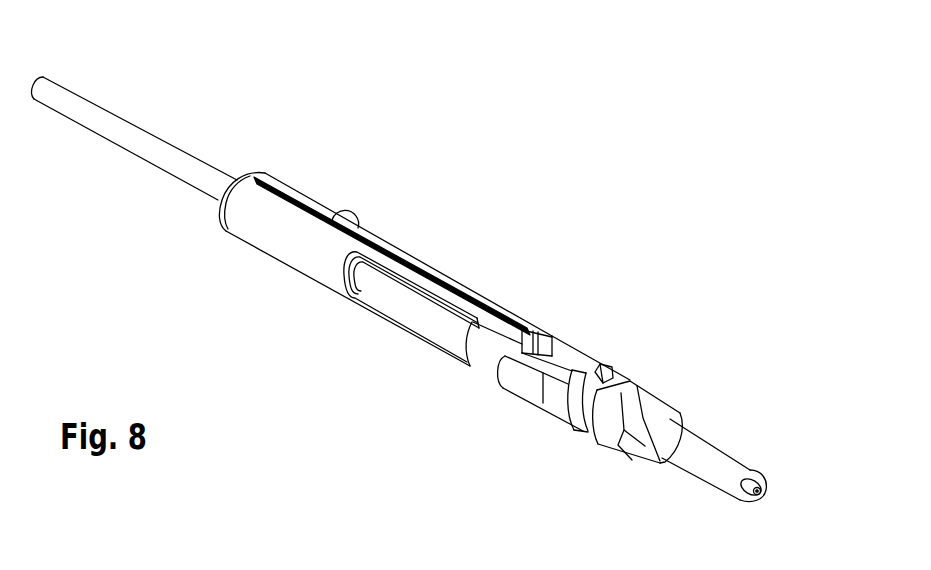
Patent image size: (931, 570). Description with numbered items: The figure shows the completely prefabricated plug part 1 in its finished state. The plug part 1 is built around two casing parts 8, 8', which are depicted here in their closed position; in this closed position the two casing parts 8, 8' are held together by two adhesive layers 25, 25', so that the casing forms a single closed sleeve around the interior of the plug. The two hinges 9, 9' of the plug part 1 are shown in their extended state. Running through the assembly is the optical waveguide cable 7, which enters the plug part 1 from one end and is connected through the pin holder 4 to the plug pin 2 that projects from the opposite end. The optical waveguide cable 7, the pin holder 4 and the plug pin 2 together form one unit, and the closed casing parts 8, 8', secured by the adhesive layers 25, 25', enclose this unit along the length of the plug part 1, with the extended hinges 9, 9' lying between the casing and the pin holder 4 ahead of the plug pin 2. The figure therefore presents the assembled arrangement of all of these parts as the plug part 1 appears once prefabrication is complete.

The plug part 1 is at (494, 110).
The plug pin 2 is at (727, 464).
The pin holder 4 is at (248, 143).
The optical waveguide cable 7 is at (160, 155).
The casing part 8 is at (385, 269).
The casing part 8' is at (392, 217).
The hinge 9 is at (577, 414).
The hinge 9' is at (602, 303).
The adhesive layer 25 is at (329, 299).
The adhesive layer 25' is at (352, 219).